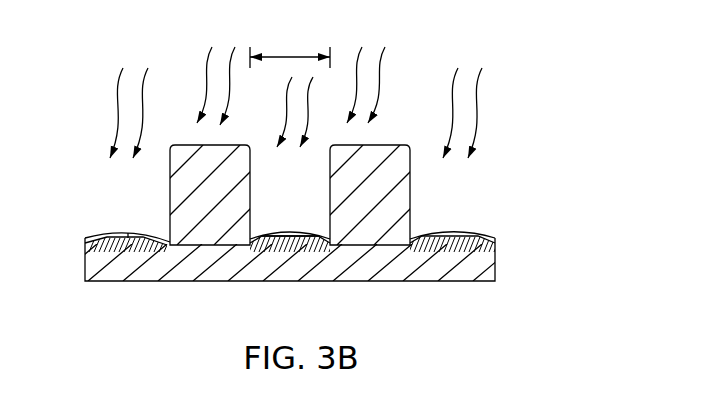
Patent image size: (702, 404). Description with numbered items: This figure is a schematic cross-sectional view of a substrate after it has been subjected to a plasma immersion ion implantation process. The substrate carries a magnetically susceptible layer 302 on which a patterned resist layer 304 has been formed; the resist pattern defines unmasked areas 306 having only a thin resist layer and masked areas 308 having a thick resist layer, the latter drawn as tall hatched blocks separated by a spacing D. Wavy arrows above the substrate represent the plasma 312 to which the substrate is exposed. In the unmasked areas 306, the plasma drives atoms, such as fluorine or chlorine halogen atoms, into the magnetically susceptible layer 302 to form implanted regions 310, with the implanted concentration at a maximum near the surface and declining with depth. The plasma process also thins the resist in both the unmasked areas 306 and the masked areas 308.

The magnetically susceptible layer 302 is at (495, 266).
The patterned resist layer 304 is at (457, 233).
The unmasked areas 306 is at (132, 232).
The masked areas 308 is at (375, 156).
The implanted regions 310 is at (296, 250).
The plasma 312 is at (480, 110).
The spacing between mask structures D is at (290, 53).